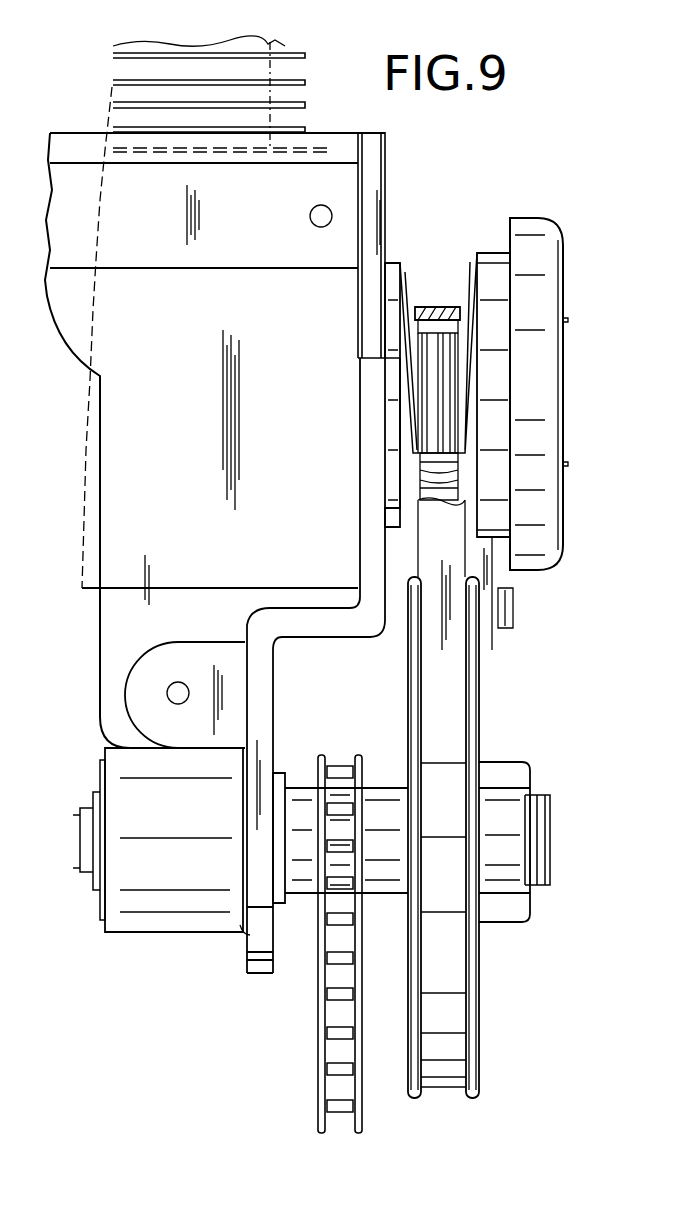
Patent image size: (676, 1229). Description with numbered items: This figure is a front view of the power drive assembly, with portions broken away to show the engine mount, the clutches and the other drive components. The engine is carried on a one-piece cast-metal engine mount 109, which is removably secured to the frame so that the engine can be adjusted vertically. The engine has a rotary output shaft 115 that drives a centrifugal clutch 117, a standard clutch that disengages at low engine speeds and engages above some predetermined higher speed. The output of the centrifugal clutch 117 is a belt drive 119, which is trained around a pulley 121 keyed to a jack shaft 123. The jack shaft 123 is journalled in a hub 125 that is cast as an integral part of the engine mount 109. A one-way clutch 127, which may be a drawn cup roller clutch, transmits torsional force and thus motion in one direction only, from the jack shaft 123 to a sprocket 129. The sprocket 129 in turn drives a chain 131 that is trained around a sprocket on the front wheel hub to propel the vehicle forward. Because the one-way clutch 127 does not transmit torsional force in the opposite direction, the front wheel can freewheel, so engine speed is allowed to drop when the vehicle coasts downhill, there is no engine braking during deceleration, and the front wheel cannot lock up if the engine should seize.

The engine mount 109 is at (80, 188).
The rotary output shaft 115 is at (447, 387).
The centrifugal clutch 117 is at (563, 273).
The belt drive 119 is at (440, 306).
The pulley 121 is at (480, 1022).
The jack shaft 123 is at (552, 828).
The hub 125 is at (132, 935).
The one-way clutch 127 is at (387, 787).
The sprocket 129 is at (340, 890).
The chain 131 is at (320, 1047).